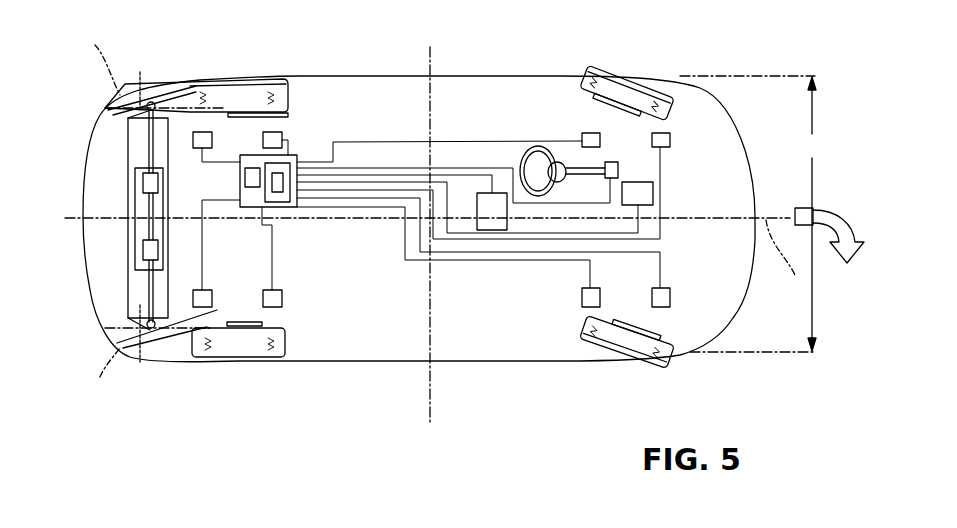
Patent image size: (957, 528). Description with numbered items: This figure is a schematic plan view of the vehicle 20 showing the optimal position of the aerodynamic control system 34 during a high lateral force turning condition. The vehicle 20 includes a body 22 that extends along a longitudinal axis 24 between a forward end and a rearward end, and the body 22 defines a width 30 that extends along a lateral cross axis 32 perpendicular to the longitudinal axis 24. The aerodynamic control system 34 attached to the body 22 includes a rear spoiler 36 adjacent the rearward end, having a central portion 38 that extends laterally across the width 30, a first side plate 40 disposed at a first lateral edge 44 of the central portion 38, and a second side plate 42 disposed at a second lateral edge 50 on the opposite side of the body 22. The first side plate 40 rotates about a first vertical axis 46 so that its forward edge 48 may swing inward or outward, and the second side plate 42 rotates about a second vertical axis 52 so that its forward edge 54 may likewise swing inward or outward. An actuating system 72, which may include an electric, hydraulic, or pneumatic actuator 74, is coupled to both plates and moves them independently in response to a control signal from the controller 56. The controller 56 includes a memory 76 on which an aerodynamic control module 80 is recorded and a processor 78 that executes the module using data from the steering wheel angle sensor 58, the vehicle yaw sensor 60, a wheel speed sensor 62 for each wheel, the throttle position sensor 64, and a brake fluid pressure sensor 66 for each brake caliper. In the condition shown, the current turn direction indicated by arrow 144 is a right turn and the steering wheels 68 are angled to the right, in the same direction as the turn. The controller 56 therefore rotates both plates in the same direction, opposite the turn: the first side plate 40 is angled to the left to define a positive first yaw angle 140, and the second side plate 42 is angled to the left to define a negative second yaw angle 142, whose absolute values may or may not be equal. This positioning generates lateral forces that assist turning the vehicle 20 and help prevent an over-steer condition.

The vehicle 20 is at (432, 183).
The body 22 is at (717, 97).
The longitudinal axis 24 is at (780, 261).
The width 30 is at (750, 214).
The lateral cross axis 32 is at (432, 62).
The aerodynamic control system 34 is at (130, 218).
The rear spoiler 36 is at (122, 281).
The central portion 38 is at (130, 307).
The first side plate 40 is at (147, 100).
The second side plate 42 is at (165, 332).
The first lateral edge 44 is at (158, 102).
The first vertical axis 46 is at (91, 68).
The forward edge 48 is at (186, 84).
The second lateral edge 50 is at (117, 343).
The second vertical axis 52 is at (98, 368).
The forward edge 54 is at (201, 308).
The controller 56 is at (298, 197).
The steering wheel angle sensor 58 is at (612, 163).
The vehicle yaw sensor 60 is at (497, 213).
The wheel speed sensor 62 is at (280, 134).
The throttle position sensor 64 is at (640, 190).
The brake fluid pressure sensor 66 is at (212, 140).
The steering wheels 68 is at (627, 95).
The actuating system 72 is at (122, 229).
The actuator 74 is at (158, 183).
The memory 76 is at (290, 188).
The processor 78 is at (252, 186).
The aerodynamic control module 80 is at (280, 180).
The first yaw angle 140 is at (208, 78).
The second yaw angle 142 is at (205, 340).
The arrow 144 is at (823, 213).